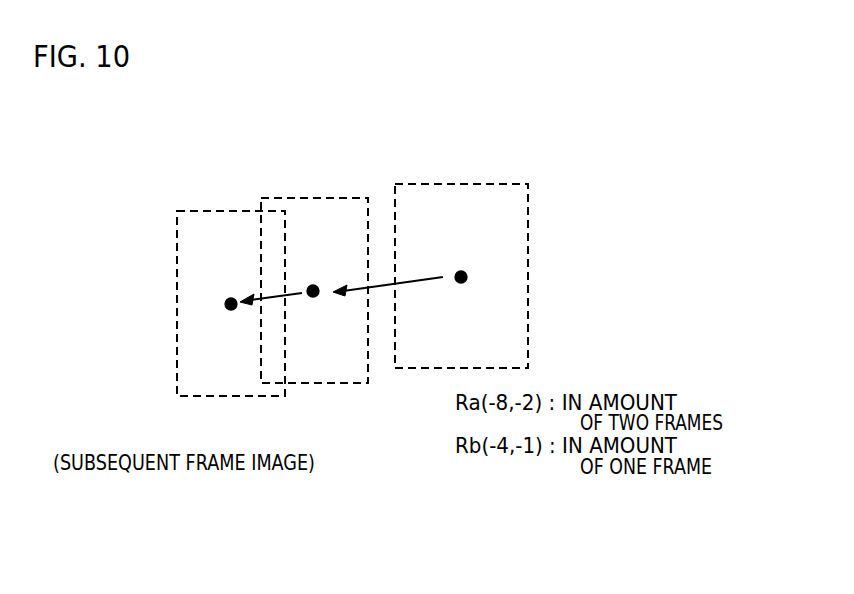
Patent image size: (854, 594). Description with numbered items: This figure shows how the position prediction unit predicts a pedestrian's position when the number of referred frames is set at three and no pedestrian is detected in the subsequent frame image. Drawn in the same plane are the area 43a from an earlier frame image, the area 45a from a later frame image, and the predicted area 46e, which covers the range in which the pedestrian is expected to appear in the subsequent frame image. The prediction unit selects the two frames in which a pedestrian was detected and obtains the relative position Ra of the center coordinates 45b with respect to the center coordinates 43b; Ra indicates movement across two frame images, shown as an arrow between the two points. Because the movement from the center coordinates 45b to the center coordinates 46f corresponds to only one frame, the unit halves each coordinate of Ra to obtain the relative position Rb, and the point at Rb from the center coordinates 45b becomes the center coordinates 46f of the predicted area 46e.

The predicted area 46e is at (184, 397).
The area 45a is at (296, 198).
The area 43a is at (472, 184).
The center coordinates 43b is at (462, 271).
The center coordinates 45b is at (313, 285).
The center coordinates 46f is at (231, 298).
The relative position Ra is at (414, 289).
The relative position Rb is at (268, 301).